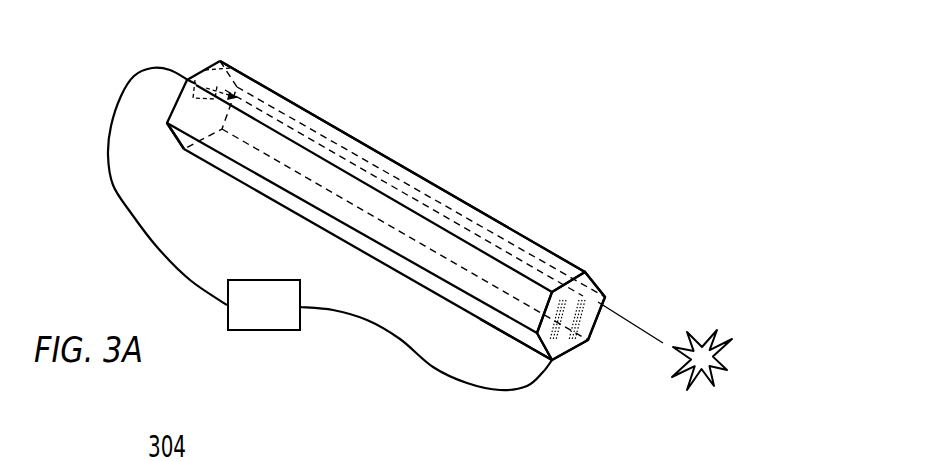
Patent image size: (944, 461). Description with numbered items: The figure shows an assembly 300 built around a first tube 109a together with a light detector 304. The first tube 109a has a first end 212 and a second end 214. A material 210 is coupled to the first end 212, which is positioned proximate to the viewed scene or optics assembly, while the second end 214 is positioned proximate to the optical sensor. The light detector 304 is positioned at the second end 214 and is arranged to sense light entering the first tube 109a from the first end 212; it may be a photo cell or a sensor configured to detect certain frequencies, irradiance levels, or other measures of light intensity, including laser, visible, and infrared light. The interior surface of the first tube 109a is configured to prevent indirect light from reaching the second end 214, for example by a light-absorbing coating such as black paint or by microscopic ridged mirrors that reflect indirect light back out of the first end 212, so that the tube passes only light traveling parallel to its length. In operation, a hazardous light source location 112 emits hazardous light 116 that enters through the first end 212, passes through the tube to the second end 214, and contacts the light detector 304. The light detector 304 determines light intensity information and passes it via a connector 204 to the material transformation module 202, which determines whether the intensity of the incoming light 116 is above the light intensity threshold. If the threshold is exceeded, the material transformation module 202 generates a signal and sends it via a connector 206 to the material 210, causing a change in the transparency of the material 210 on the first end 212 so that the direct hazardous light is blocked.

The assembly 300 is at (469, 147).
The hazardous light 116 is at (292, 129).
The light detector 304 is at (214, 62).
The second end 214 is at (182, 152).
The first tube 109a is at (522, 237).
The material 210 is at (606, 282).
The hazardous light source location 112 is at (729, 350).
The connector 204 is at (124, 222).
The material transformation module 202 is at (285, 321).
The connector 206 is at (507, 391).
The first end 212 is at (516, 349).